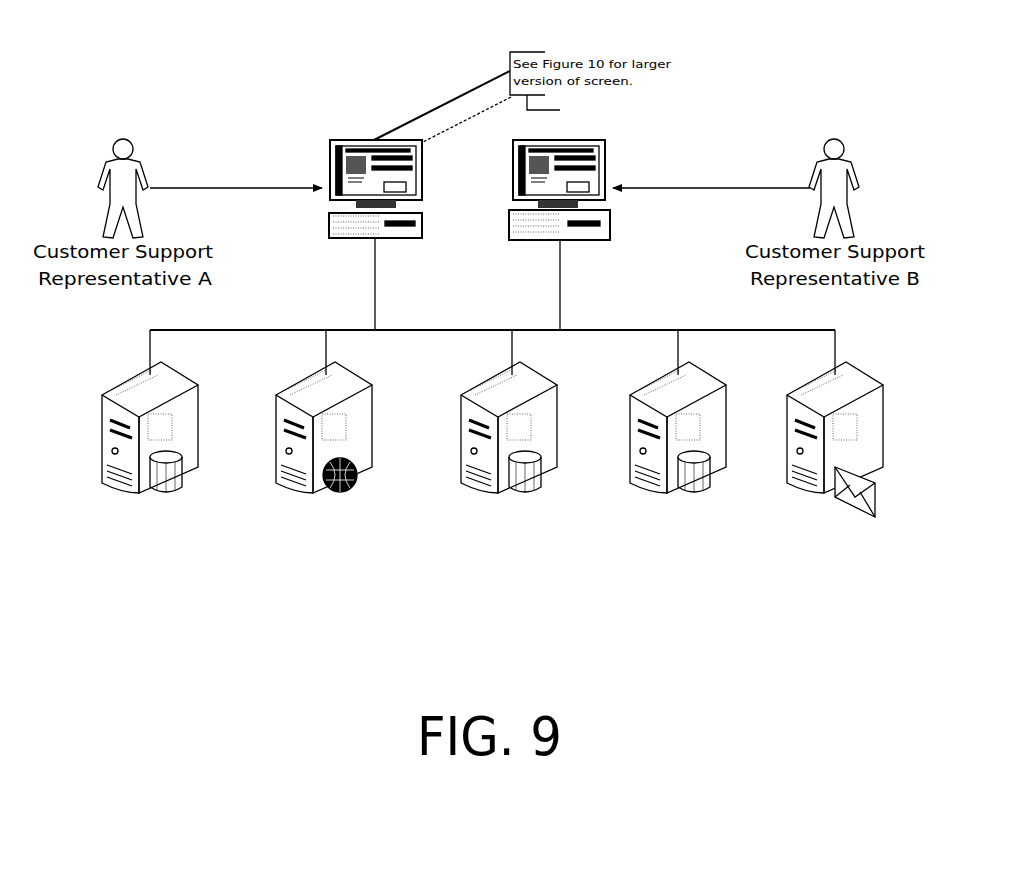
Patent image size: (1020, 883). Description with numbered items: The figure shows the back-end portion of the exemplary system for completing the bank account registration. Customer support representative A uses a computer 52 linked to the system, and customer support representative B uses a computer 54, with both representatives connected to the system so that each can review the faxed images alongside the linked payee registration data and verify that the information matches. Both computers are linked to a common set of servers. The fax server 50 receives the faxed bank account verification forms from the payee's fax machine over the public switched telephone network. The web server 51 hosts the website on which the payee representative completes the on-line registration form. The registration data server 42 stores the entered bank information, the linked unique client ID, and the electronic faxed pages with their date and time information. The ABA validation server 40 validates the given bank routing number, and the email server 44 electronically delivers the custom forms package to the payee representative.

The computer 52 is at (352, 133).
The computer 54 is at (616, 163).
The fax server 50 is at (108, 497).
The web server 51 is at (280, 497).
The registration data server 42 is at (455, 490).
The ABA validation server 40 is at (632, 490).
The email server 44 is at (792, 488).